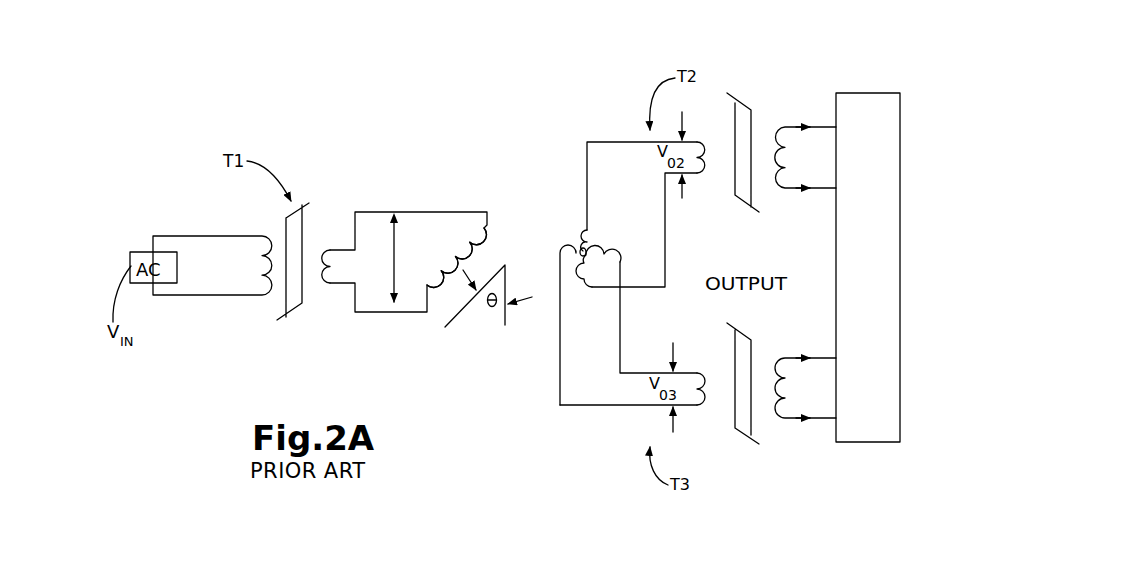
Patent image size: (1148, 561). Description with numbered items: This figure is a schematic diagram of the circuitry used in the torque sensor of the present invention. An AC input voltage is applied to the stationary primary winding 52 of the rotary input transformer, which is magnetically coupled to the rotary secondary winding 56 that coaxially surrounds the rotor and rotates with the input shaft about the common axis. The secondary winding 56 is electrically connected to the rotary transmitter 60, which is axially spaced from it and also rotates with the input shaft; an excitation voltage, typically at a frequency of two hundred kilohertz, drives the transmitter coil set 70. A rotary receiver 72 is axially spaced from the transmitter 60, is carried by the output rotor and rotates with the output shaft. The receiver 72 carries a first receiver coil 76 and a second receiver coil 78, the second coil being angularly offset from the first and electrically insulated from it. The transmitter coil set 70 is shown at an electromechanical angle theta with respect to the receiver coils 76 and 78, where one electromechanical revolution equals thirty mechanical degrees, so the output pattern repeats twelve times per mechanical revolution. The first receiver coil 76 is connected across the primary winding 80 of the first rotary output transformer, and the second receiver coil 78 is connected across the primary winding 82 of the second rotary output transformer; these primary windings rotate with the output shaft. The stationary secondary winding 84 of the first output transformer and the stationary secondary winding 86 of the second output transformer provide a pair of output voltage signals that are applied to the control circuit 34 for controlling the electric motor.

The control circuit 34 is at (868, 137).
The primary winding 52 is at (261, 268).
The secondary winding 56 is at (325, 272).
The rotary transmitter 60 is at (493, 208).
The transmitter coil set 70 is at (440, 264).
The rotary receiver 72 is at (593, 388).
The first receiver coil 76 is at (585, 248).
The second receiver coil 78 is at (590, 253).
The primary winding 80 is at (703, 158).
The primary winding 82 is at (690, 392).
The secondary winding 84 is at (798, 126).
The secondary winding 86 is at (786, 392).